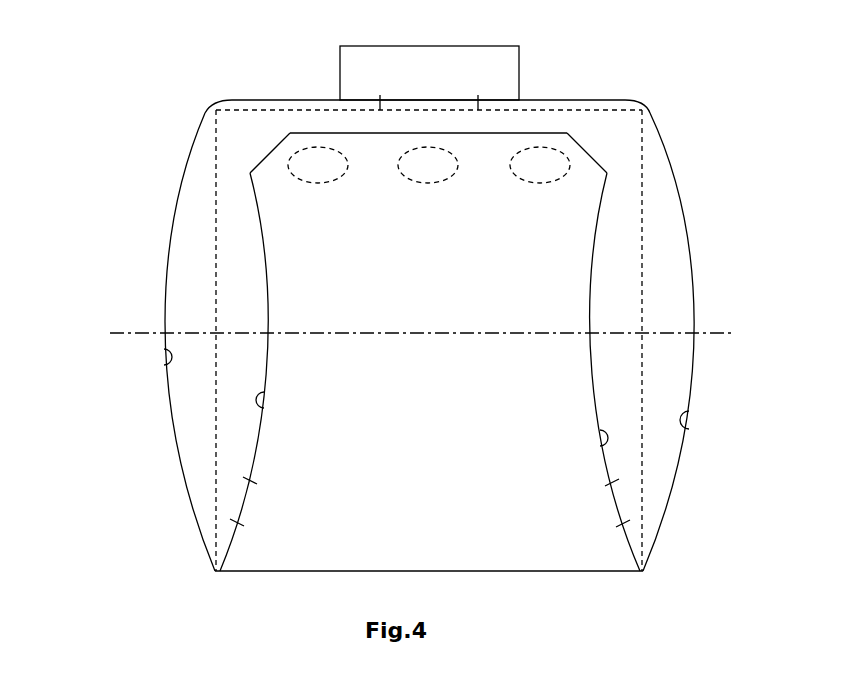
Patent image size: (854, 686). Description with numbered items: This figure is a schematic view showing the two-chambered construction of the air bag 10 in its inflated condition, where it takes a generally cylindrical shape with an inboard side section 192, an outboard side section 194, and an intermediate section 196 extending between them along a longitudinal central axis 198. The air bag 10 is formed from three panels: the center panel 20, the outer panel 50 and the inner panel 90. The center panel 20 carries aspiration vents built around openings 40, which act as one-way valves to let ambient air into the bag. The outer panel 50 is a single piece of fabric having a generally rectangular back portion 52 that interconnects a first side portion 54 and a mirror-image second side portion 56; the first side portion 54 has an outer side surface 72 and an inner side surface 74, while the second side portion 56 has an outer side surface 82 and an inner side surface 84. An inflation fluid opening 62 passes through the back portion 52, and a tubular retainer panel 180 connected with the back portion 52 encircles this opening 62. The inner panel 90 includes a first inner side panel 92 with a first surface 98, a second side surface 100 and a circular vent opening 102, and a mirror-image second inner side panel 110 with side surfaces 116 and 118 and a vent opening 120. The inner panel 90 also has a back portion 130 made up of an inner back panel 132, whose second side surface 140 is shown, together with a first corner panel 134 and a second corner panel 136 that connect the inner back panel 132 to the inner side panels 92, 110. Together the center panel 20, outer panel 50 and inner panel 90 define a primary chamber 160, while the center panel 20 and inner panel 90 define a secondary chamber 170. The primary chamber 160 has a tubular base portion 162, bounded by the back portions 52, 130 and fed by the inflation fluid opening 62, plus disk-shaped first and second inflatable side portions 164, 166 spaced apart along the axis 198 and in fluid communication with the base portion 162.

The air bag 10 is at (773, 237).
The center panel 20 is at (292, 579).
The opening 40 is at (328, 183).
The outer panel 50 is at (181, 187).
The back portion 52 is at (298, 100).
The first side portion 54 is at (167, 277).
The second side portion 56 is at (688, 242).
The inflation fluid opening 62 is at (435, 98).
The outer side surface 72 is at (163, 357).
The inner side surface 74 is at (165, 310).
The outer side surface 82 is at (689, 430).
The inner side surface 84 is at (695, 378).
The inner panel 90 is at (258, 464).
The first inner side panel 92 is at (268, 281).
The first surface 98 is at (268, 365).
The second side surface 100 is at (265, 409).
The vent opening 102 is at (244, 501).
The second inner side panel 110 is at (593, 263).
The first side surface 116 is at (592, 393).
The second side surface 118 is at (600, 436).
The vent opening 120 is at (613, 500).
The back portion 130 is at (483, 140).
The inner back panel 132 is at (375, 135).
The first corner panel 134 is at (265, 158).
The second corner panel 136 is at (600, 157).
The second side surface 140 is at (450, 133).
The primary chamber 160 is at (572, 120).
The base portion 162 is at (490, 129).
The first inflatable side portion 164 is at (186, 372).
The second inflatable side portion 166 is at (610, 376).
The secondary chamber 170 is at (410, 422).
The retainer panel 180 is at (368, 45).
The inboard side section 192 is at (151, 497).
The outboard side section 194 is at (704, 474).
The intermediate section 196 is at (456, 594).
The longitudinal central axis 198 is at (717, 333).